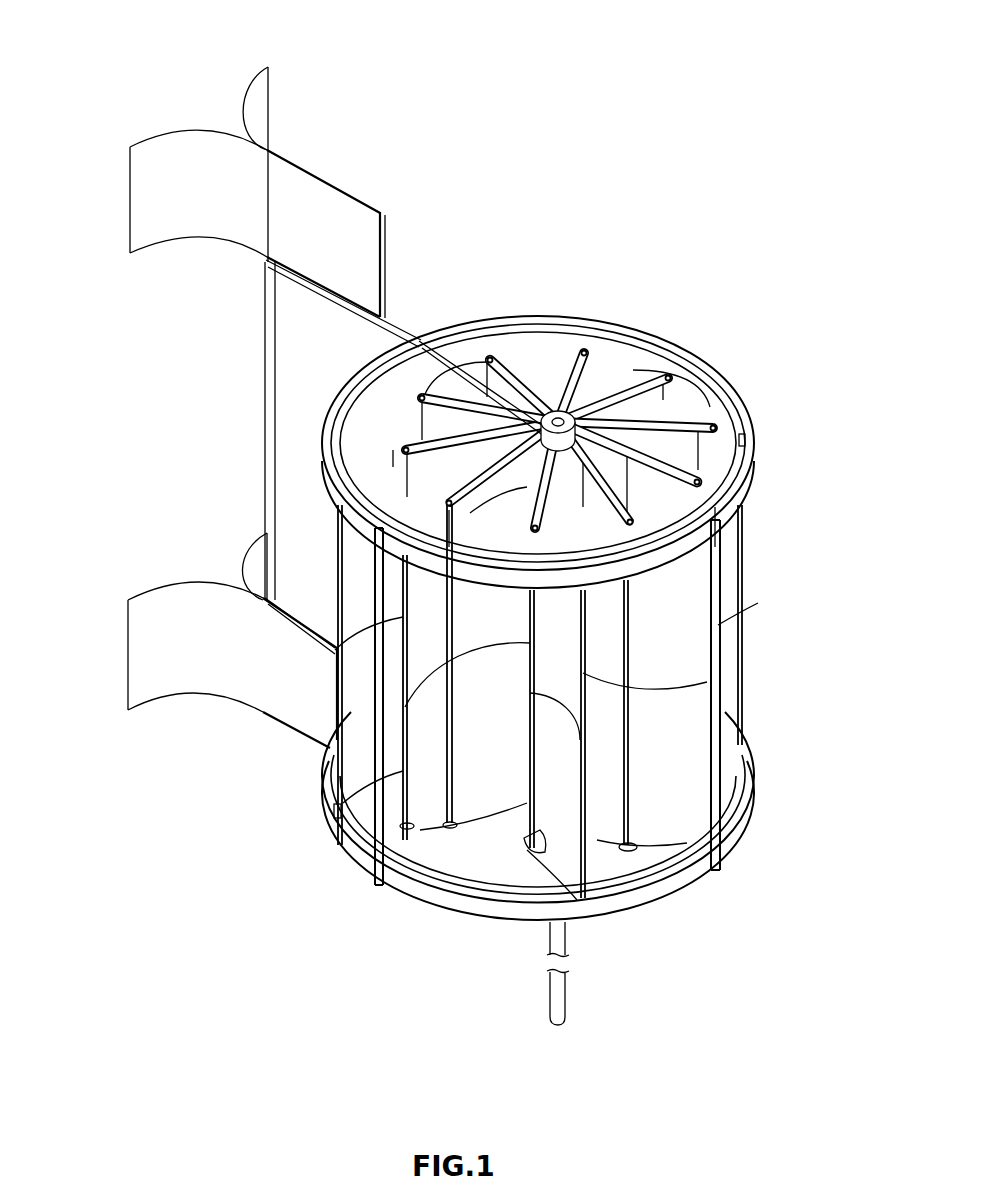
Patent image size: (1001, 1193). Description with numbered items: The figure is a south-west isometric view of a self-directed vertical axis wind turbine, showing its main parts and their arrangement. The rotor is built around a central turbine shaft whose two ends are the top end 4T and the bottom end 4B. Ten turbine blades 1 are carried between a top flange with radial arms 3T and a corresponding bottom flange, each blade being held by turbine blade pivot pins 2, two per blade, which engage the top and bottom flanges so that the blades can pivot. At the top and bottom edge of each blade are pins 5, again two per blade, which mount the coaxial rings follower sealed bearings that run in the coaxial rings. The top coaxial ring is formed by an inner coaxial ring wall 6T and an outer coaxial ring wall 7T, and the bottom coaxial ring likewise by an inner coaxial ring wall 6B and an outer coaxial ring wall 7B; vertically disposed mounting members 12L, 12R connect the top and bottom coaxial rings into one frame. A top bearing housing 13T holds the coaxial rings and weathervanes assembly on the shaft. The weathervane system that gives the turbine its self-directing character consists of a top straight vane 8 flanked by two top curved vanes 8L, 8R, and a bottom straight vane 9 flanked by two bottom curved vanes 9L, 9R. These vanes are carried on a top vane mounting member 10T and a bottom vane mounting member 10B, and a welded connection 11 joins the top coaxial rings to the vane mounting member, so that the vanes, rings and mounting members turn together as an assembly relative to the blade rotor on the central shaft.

The turbine blade 1 is at (682, 792).
The turbine blade pivot pin 2 is at (631, 846).
The top flange with radial arms 3T is at (577, 390).
The top end of central turbine shaft 4T is at (585, 420).
The bottom end of central turbine shaft 4B is at (563, 940).
The coaxial ring follower bearing pin 5 is at (742, 446).
The top inner coaxial ring wall 6T is at (570, 320).
The bottom inner coaxial ring wall 6B is at (425, 885).
The top outer coaxial ring wall 7T is at (513, 318).
The bottom outer coaxial ring wall 7B is at (473, 897).
The top straight vane 8 is at (292, 191).
The top left curved vane 8L is at (205, 163).
The top right curved vane 8R is at (253, 113).
The bottom straight vane 9 is at (290, 640).
The bottom left curved vane 9L is at (155, 608).
The bottom right curved vane 9R is at (258, 562).
The top vane mounting member 10T is at (400, 340).
The bottom vane mounting member 10B is at (262, 527).
The welded connection 11 is at (423, 340).
The left vertical mounting member 12L is at (373, 862).
The right vertical mounting member 12R is at (720, 595).
The top bearing housing 13T is at (410, 393).